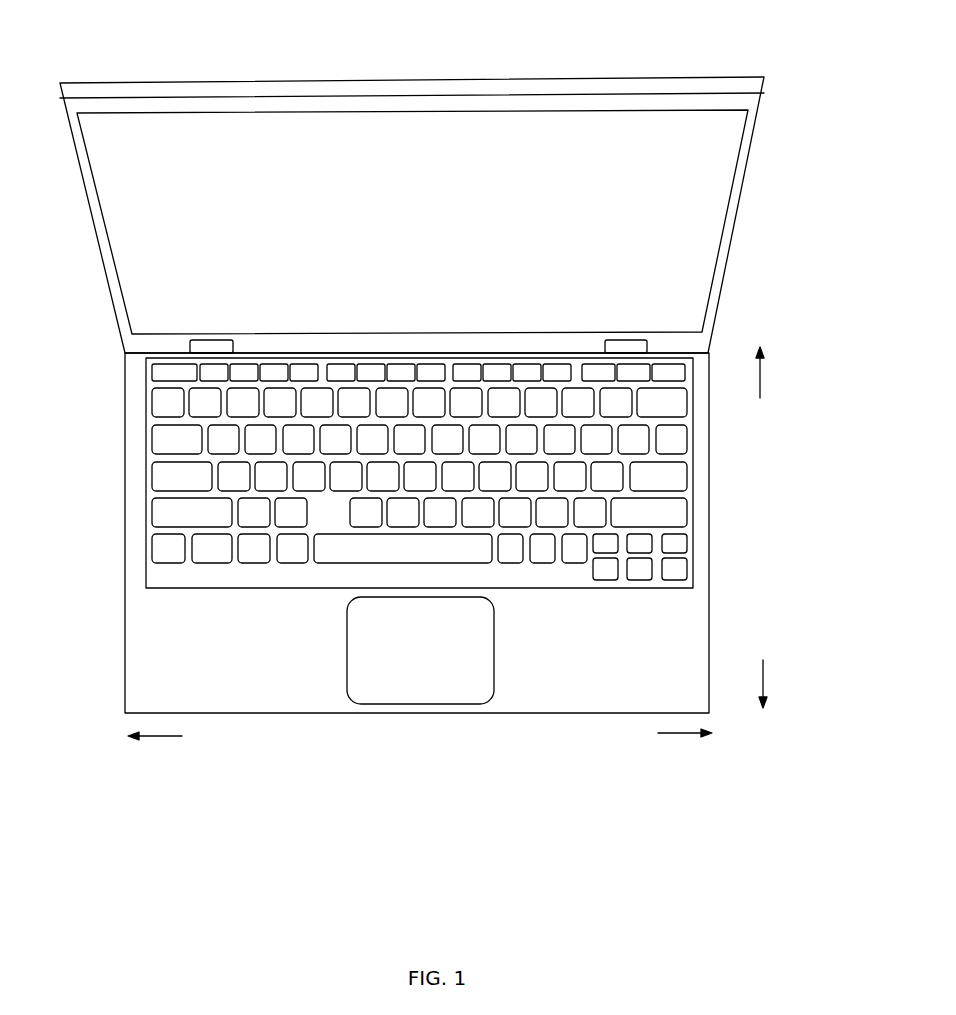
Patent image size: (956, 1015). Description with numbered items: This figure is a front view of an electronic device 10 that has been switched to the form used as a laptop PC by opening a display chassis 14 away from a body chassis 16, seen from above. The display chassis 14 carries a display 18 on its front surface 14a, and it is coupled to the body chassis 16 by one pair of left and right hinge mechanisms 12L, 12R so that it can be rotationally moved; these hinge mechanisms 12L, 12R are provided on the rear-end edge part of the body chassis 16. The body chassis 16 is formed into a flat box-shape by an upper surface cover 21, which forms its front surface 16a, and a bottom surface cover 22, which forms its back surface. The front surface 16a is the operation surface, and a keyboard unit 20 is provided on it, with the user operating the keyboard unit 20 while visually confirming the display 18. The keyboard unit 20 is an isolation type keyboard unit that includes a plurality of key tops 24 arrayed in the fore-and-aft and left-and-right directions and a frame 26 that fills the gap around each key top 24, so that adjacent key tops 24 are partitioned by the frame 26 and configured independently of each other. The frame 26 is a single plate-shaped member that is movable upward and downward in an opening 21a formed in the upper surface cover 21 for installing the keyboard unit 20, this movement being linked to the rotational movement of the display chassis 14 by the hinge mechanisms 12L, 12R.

The electronic device 10 is at (75, 34).
The display chassis 14 is at (442, 215).
The front surface of display chassis 14a is at (723, 257).
The display 18 is at (705, 210).
The left hinge mechanism 12L is at (207, 347).
The right hinge mechanism 12R is at (620, 347).
The body chassis 16 is at (512, 780).
The front surface of body chassis 16a is at (142, 650).
The upper surface cover 21 is at (532, 688).
The bottom surface cover 22 is at (578, 687).
The opening 21a is at (438, 588).
The keyboard unit 20 is at (416, 495).
The key top 24 is at (597, 475).
The frame 26 is at (160, 537).